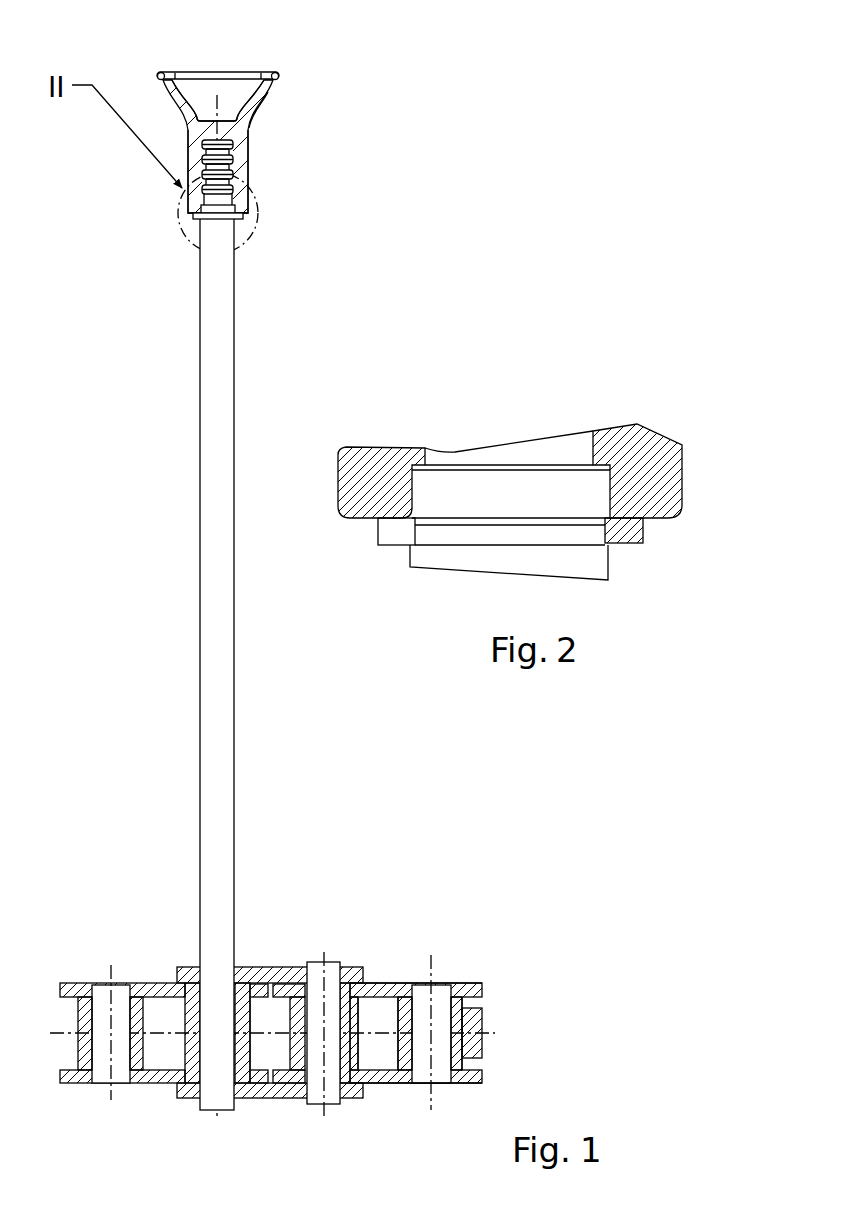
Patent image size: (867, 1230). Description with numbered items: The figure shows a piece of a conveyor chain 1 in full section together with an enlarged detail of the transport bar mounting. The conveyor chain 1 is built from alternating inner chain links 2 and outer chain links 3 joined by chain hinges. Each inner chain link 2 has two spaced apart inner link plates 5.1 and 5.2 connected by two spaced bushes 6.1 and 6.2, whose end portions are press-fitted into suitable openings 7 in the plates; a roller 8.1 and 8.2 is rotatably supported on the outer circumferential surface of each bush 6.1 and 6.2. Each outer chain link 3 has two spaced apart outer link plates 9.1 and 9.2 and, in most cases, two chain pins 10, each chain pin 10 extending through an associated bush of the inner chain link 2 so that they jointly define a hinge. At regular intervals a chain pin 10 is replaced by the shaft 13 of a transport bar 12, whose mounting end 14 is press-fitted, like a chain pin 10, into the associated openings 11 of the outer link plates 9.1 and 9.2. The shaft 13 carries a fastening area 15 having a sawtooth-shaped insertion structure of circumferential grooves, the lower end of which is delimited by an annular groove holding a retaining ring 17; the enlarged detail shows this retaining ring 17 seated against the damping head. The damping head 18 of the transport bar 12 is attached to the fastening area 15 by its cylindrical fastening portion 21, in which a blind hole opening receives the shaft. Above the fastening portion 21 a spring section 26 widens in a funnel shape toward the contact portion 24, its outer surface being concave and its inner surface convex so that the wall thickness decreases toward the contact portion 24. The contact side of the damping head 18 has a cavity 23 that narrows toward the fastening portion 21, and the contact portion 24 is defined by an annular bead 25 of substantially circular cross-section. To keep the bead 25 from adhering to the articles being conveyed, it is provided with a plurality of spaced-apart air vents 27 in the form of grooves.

In FIG. 1, the conveyor chain 1 is at (70, 1130).
In FIG. 1, the inner chain link 2 is at (145, 978).
In FIG. 1, the outer chain link 3 is at (262, 967).
In FIG. 1, the inner link plate 5.1 is at (488, 985).
In FIG. 1, the inner link plate 5.2 is at (482, 1078).
In FIG. 1, the bush 6.1 is at (355, 1070).
In FIG. 1, the bush 6.2 is at (452, 983).
In FIG. 1, the openings 7 is at (400, 983).
In FIG. 1, the roller 8.1 is at (398, 1070).
In FIG. 1, the roller 8.2 is at (470, 1010).
In FIG. 1, the outer link plate 9.1 is at (287, 984).
In FIG. 1, the outer link plate 9.2 is at (262, 1098).
In FIG. 1, the chain pin 10 is at (330, 962).
In FIG. 1, the openings 11 is at (205, 978).
In FIG. 1, the transport bar 12 is at (140, 416).
In FIG. 1, the shaft 13 is at (228, 357).
In FIG. 2, the shaft 13 is at (604, 564).
In FIG. 1, the mounting end 14 is at (185, 1048).
In FIG. 1, the fastening area 15 is at (242, 165).
In FIG. 1, the retaining ring 17 is at (244, 214).
In FIG. 2, the retaining ring 17 is at (395, 532).
In FIG. 1, the damping head 18 is at (270, 124).
In FIG. 2, the damping head 18 is at (690, 466).
In FIG. 1, the fastening portion 21 is at (252, 178).
In FIG. 1, the cavity 23 is at (207, 97).
In FIG. 1, the contact portion 24 is at (280, 74).
In FIG. 1, the annular bead 25 is at (158, 75).
In FIG. 1, the spring section 26 is at (266, 97).
In FIG. 1, the air vents 27 is at (187, 74).